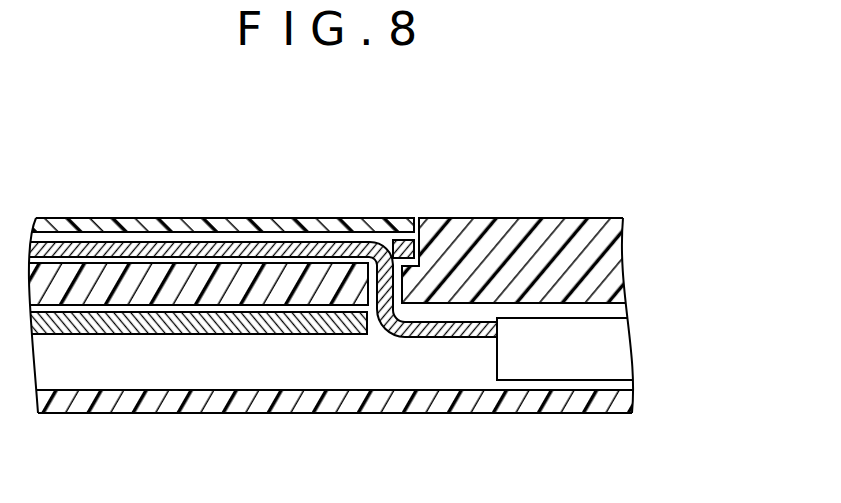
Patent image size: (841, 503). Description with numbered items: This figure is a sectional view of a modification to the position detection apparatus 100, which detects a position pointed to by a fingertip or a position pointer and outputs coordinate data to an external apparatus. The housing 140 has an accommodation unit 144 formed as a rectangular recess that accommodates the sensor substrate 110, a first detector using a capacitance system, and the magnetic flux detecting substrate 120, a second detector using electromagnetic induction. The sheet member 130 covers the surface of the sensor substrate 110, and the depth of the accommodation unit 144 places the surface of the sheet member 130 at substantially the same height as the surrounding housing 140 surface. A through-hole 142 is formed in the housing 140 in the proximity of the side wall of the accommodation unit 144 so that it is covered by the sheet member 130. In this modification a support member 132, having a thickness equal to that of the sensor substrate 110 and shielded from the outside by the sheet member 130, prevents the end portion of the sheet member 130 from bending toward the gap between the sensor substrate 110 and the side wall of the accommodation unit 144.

The position detection apparatus 100 is at (343, 289).
The sensor substrate 110 is at (163, 250).
The magnetic flux detecting substrate 120 is at (245, 328).
The sheet member 130 is at (263, 229).
The support member 132 is at (403, 246).
The housing 140 is at (470, 246).
The through-hole 142 is at (373, 301).
The accommodation unit 144 is at (82, 268).